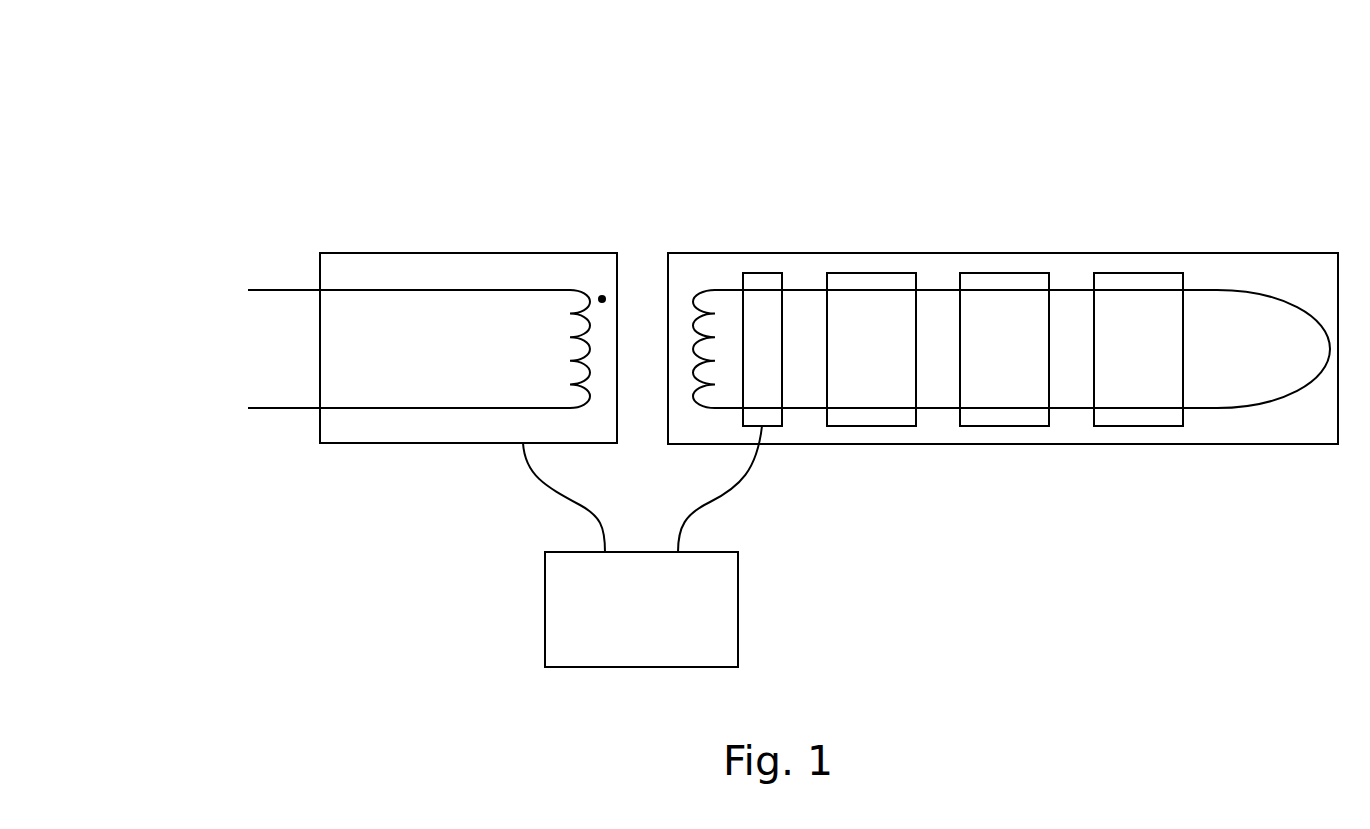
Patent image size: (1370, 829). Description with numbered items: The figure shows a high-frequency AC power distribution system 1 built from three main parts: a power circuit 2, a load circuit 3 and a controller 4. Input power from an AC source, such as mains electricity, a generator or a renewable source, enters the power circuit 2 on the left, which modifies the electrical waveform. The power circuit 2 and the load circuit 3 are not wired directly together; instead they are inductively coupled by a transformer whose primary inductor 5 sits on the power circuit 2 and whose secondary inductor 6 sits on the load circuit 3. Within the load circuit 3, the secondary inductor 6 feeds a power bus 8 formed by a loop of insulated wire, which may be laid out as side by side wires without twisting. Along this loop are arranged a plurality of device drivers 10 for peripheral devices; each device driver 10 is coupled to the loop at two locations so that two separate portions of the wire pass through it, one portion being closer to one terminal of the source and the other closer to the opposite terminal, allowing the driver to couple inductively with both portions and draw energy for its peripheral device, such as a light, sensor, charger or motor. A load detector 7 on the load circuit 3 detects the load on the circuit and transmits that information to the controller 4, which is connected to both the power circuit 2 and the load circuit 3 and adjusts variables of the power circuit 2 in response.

The induction heating device 1 is at (305, 151).
The power circuit 2 is at (438, 252).
The load circuit 3 is at (803, 253).
The controller 4 is at (738, 607).
The primary inductor 5 is at (586, 297).
The secondary inductor 6 is at (707, 290).
The load detector 7 is at (771, 427).
The power bus 8 is at (1080, 410).
The device drivers 10 is at (1022, 272).